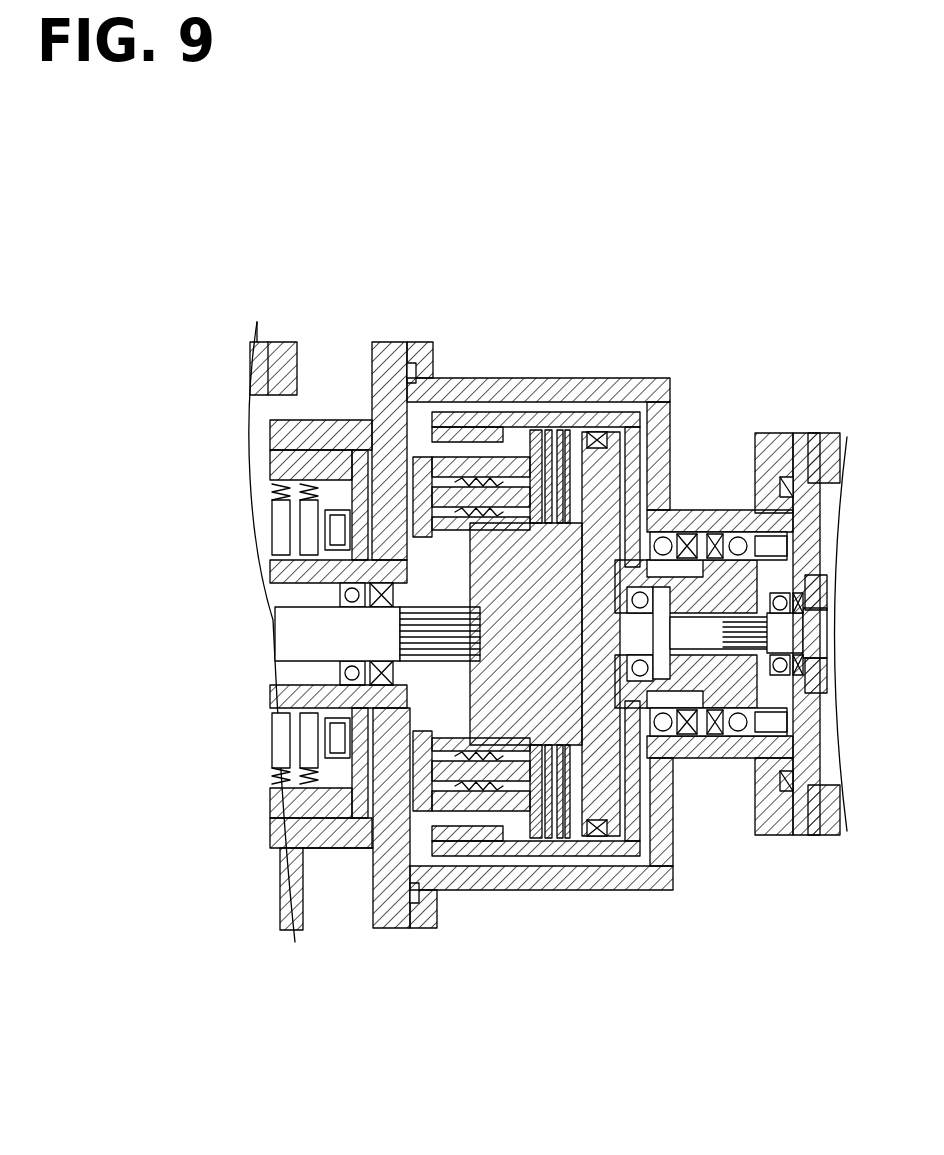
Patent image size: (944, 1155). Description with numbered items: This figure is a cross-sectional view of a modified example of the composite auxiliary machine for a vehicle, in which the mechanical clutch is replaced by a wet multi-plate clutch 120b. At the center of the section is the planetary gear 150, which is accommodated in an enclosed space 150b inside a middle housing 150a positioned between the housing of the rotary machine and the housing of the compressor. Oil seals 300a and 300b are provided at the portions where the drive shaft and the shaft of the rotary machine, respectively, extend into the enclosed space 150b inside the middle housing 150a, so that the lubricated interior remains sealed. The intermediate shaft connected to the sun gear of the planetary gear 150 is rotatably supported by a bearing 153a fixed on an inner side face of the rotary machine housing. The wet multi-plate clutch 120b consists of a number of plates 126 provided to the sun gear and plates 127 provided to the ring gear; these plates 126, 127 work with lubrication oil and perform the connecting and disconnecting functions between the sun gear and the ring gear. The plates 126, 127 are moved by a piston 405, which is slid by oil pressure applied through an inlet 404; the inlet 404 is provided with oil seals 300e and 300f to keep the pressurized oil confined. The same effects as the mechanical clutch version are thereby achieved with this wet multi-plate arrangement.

The oil seal 300a is at (368, 540).
The oil seal 300b is at (383, 560).
The planetary gear 150 is at (467, 406).
The middle housing 150a is at (608, 392).
The enclosed space 150b is at (423, 837).
The wet multi-plate clutch 120b is at (518, 520).
The plates 126 is at (535, 470).
The plates 127 is at (562, 470).
The piston 405 is at (668, 515).
The inlet 404 is at (722, 520).
The bearing 153a is at (697, 520).
The oil seal 300e is at (690, 745).
The oil seal 300f is at (722, 748).